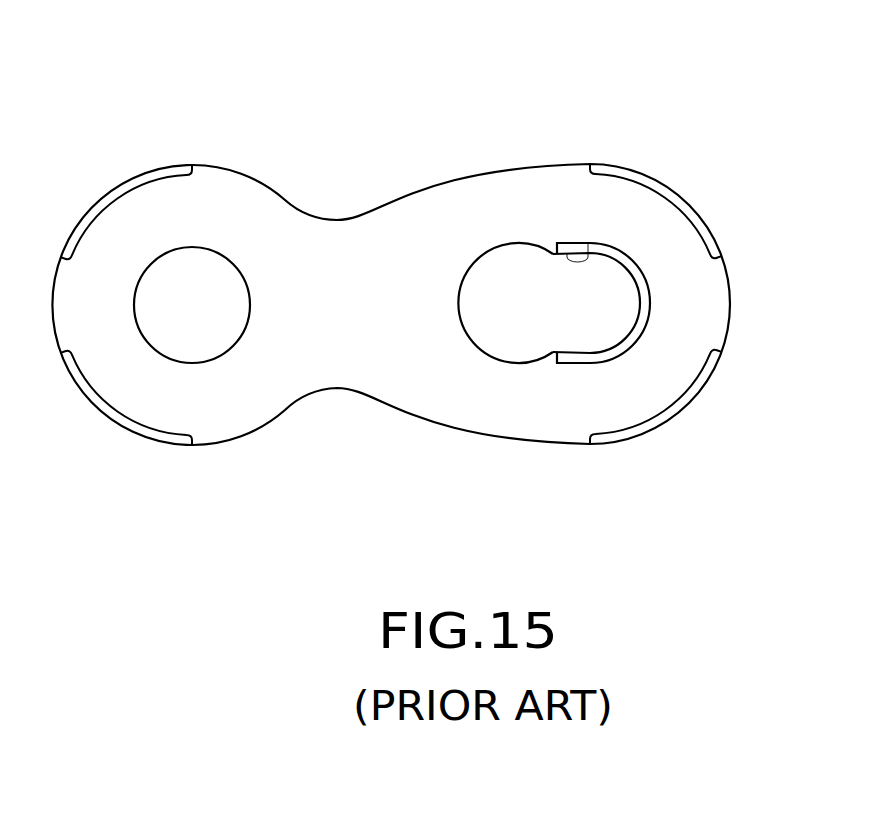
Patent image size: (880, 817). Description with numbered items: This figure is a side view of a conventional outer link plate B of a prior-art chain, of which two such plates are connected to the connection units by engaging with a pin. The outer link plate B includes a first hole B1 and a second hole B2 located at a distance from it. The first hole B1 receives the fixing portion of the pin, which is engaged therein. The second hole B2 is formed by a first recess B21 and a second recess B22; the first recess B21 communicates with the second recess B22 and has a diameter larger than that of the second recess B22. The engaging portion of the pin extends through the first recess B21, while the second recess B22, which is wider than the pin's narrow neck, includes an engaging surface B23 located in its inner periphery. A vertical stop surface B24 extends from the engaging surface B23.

The outer link plate B is at (324, 240).
The first hole B1 is at (175, 278).
The second hole B2 is at (530, 298).
The first recess B21 is at (460, 313).
The second recess B22 is at (633, 333).
The engaging surface B23 is at (638, 275).
The vertical stop surface B24 is at (566, 252).